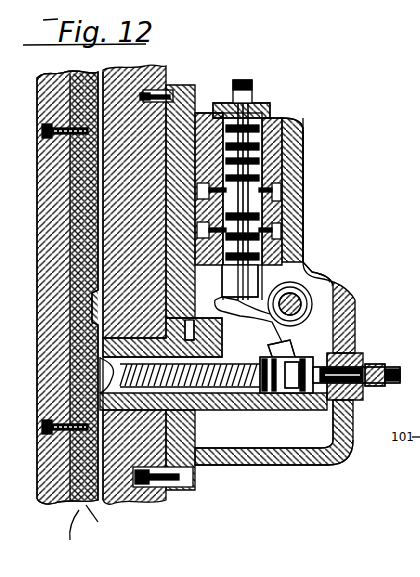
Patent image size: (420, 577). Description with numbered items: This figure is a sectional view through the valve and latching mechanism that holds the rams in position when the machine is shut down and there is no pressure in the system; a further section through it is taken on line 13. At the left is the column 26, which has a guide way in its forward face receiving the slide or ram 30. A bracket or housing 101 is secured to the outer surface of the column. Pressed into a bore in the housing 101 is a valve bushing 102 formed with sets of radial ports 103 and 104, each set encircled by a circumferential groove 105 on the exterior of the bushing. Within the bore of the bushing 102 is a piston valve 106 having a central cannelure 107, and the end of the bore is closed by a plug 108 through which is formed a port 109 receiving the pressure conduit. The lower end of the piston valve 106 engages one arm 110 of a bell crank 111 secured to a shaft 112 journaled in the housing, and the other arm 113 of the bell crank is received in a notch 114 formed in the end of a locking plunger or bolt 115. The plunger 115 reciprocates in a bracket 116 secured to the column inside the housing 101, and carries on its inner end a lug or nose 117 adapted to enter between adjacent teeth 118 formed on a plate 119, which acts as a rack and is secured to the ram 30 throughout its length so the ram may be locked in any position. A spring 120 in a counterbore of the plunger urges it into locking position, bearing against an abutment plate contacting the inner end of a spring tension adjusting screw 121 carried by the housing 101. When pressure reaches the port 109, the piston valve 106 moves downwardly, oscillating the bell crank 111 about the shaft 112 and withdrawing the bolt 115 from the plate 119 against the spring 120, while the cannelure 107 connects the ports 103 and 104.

The slide or ram 30 is at (70, 74).
The column 26 is at (148, 70).
The section line 13- 13 is at (222, 56).
The bracket or housing 101 is at (300, 160).
The valve bushing 102 is at (272, 112).
The radial ports 103 is at (290, 190).
The radial ports 104 is at (290, 230).
The circumferential groove 105 is at (285, 222).
The piston valve 106 is at (305, 132).
The cannelure 107 is at (300, 170).
The plug 108 is at (257, 108).
The port 109 is at (250, 100).
The arm of bell crank 110 is at (222, 302).
The bell crank 111 is at (312, 304).
The shaft 112 is at (292, 303).
The arm of bell crank 113 is at (320, 330).
The notch 114 is at (258, 412).
The locking plunger or bolt 115 is at (296, 405).
The bracket 116 is at (210, 418).
The lug or nose 117 is at (163, 303).
The lugs or teeth 118 is at (103, 519).
The plate 119 is at (81, 530).
The spring 120 is at (274, 440).
The spring tension adjusting screw 121 is at (405, 356).